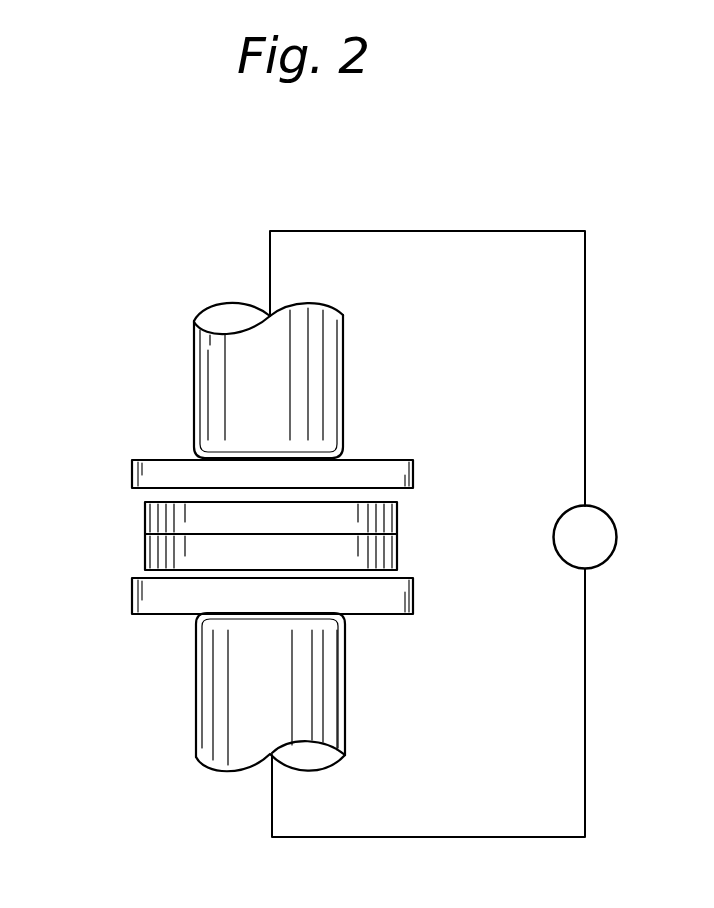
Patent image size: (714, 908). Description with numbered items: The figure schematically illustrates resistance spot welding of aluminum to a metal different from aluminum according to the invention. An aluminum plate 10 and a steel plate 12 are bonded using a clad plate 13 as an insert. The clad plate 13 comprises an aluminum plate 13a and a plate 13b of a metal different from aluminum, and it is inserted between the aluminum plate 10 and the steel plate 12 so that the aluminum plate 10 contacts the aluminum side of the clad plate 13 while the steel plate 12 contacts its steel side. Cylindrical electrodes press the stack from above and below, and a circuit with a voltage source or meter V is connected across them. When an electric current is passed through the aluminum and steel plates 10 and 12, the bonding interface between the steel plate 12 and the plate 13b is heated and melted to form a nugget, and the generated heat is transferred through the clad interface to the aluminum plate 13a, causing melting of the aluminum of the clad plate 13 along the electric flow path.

The aluminum plate 10 is at (131, 468).
The steel plate 12 is at (131, 596).
The clad plate 13 is at (256, 542).
The aluminum plate of clad plate 13a is at (397, 519).
The plate of metal different from aluminum 13b is at (397, 557).
The voltmeter V is at (443, 534).